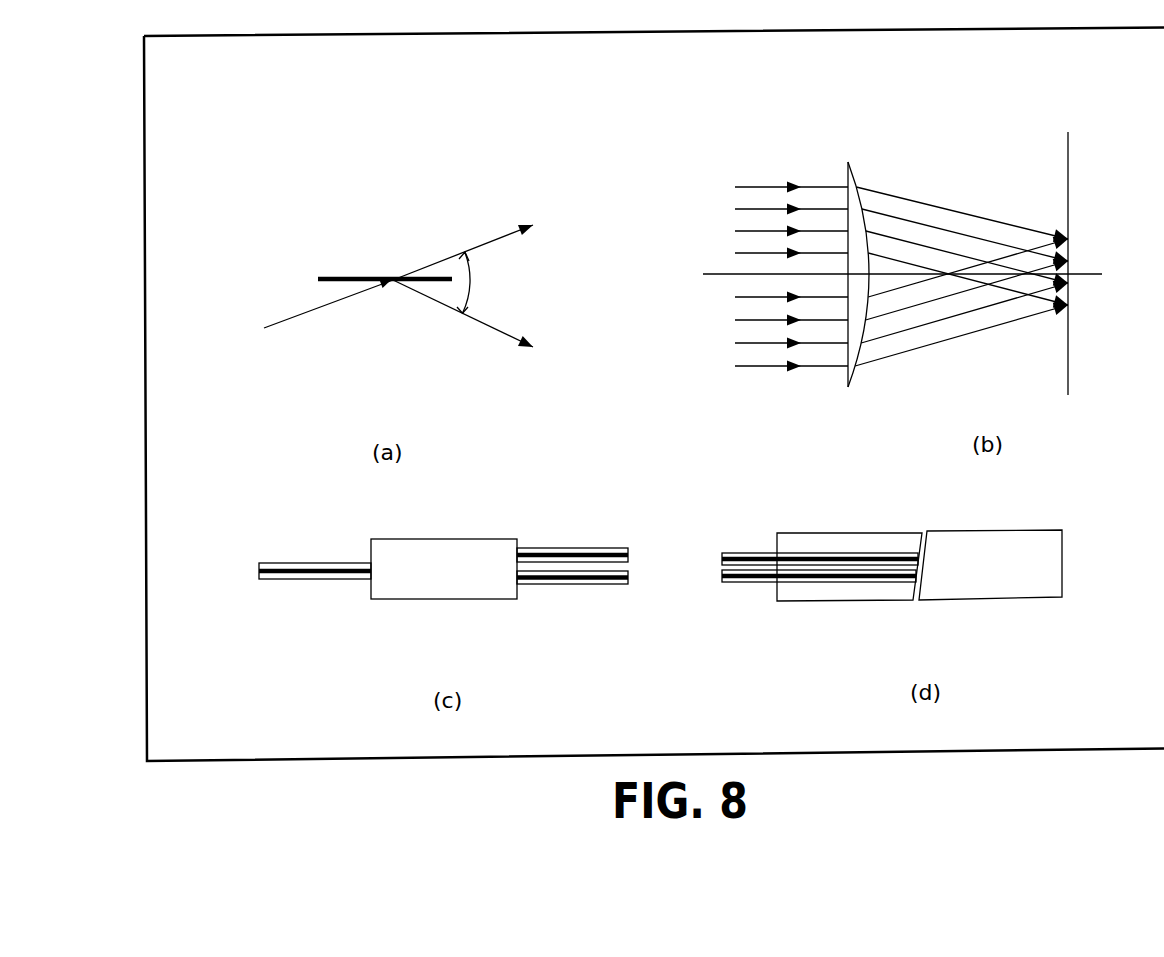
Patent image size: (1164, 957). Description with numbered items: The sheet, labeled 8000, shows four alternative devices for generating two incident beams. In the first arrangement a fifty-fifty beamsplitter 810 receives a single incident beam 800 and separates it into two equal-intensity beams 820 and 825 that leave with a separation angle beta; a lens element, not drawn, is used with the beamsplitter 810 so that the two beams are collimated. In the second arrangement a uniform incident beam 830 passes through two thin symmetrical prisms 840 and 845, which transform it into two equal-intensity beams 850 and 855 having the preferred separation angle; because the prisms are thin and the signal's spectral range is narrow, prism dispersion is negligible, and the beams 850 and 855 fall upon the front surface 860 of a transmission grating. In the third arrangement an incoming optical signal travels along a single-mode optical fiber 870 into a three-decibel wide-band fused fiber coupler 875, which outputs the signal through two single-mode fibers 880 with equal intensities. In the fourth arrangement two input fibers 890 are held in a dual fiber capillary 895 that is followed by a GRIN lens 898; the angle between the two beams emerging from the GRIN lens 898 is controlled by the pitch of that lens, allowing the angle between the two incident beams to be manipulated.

The optical arrangement examples 8000 is at (693, 73).
The incident beam 800 is at (292, 315).
The 50/50 beamsplitter 810 is at (338, 278).
The equal-intensity beam 820 is at (488, 243).
The equal-intensity beam 825 is at (498, 327).
The uniform incident beam 830 is at (773, 253).
The symmetrical prism 840 is at (855, 207).
The symmetrical prism 845 is at (858, 330).
The equal-intensity beam 850 is at (945, 242).
The equal-intensity beam 855 is at (953, 307).
The front surface of transmission grating 860 is at (1068, 173).
The single-mode optical fiber 870 is at (323, 573).
The 3 dB wide-band fused fiber coupler 875 is at (435, 575).
The single-mode fibers 880 is at (548, 582).
The input fibers 890 is at (760, 572).
The dual fiber capillary 895 is at (877, 590).
The GRIN lens 898 is at (993, 575).